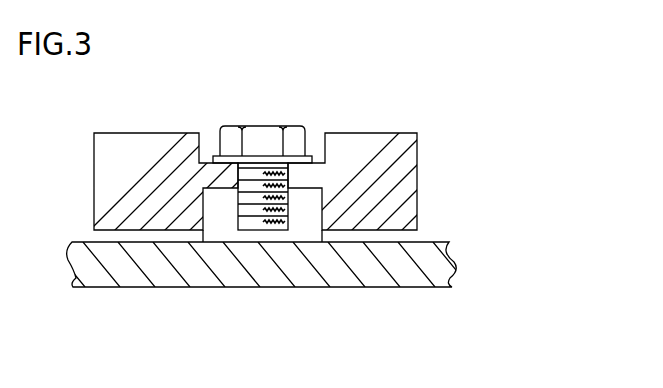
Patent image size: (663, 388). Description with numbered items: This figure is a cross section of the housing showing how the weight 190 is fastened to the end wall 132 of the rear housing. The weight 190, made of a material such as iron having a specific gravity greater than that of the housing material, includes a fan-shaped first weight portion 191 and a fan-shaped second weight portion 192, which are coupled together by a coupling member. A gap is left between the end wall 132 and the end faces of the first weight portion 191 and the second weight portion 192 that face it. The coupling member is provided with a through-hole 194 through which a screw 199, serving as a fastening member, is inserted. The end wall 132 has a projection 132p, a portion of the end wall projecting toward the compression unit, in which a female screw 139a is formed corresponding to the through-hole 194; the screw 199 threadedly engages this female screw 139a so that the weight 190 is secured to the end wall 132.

The weight 190 is at (366, 160).
The first weight portion 191 is at (152, 132).
The second weight portion 192 is at (372, 132).
The through-hole 194 is at (292, 187).
The screw 199 is at (263, 125).
The female screw 139a is at (238, 208).
The end wall 132 is at (453, 263).
The projection 132p is at (326, 192).